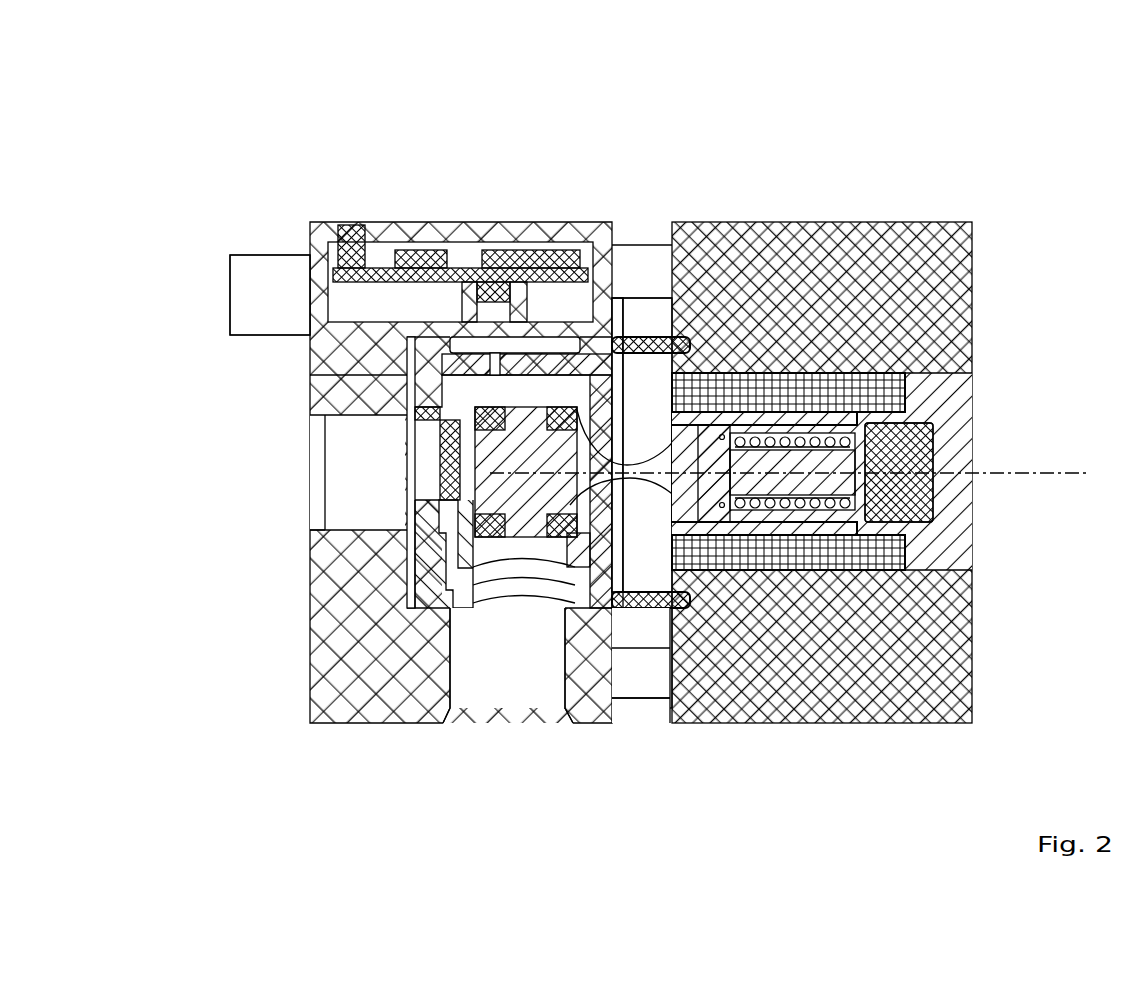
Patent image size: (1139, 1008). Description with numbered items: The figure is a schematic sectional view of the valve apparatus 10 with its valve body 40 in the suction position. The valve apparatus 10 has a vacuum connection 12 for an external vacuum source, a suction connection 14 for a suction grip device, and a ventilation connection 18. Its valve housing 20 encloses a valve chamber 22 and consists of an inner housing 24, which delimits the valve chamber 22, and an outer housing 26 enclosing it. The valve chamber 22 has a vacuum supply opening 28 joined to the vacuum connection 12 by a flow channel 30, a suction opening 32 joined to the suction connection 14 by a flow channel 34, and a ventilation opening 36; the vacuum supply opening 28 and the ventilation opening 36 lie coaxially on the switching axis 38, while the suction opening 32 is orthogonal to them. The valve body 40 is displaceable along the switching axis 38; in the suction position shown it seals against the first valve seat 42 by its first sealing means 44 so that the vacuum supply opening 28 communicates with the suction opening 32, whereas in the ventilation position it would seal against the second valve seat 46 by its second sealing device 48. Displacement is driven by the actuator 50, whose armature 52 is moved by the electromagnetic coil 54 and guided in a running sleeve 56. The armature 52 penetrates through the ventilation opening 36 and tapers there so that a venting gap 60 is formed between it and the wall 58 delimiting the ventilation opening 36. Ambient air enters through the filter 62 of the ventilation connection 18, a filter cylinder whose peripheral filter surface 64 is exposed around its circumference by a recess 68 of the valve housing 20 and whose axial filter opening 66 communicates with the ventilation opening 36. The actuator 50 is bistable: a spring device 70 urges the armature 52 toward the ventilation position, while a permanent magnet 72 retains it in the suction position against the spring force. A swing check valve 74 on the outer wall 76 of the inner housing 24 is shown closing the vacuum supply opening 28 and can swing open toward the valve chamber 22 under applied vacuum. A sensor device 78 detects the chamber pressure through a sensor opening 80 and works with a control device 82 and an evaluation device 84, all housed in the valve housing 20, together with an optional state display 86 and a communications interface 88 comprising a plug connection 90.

The valve apparatus 10 is at (530, 125).
The vacuum connection 12 is at (280, 478).
The suction connection 14 is at (505, 760).
The ventilation connection 18 is at (642, 760).
The valve housing 20 is at (785, 236).
The valve chamber 22 is at (458, 385).
The inner housing 24 is at (448, 598).
The outer housing 26 is at (322, 728).
The vacuum supply opening 28 is at (432, 455).
The flow channel 30 is at (357, 422).
The suction opening 32 is at (500, 575).
The flow channel 34 is at (480, 687).
The ventilation opening 36 is at (628, 570).
The switching axis 38 is at (1058, 480).
The valve body 40 is at (485, 462).
The first valve seat 42 is at (597, 553).
The first sealing means 44 is at (550, 537).
The second valve seat 46 is at (470, 545).
The second sealing device 48 is at (492, 533).
The actuator 50 is at (822, 471).
The armature 52 is at (698, 505).
The electromagnetic coil 54 is at (830, 560).
The running sleeve 56 is at (843, 440).
The wall 58 is at (698, 395).
The venting gap 60 is at (612, 437).
The filter 62 is at (626, 310).
The peripheral filter surface 64 is at (660, 328).
The axial filter opening 66 is at (612, 375).
The recess 68 is at (645, 168).
The spring device 70 is at (850, 412).
The permanent magnet 72 is at (920, 450).
The swing check valve 74 is at (405, 533).
The outer wall 76 is at (418, 575).
The sensor device 78 is at (490, 290).
The sensor opening 80 is at (497, 362).
The control device 82 is at (418, 255).
The evaluation device 84 is at (553, 258).
The state display 86 is at (352, 240).
The communications interface 88 is at (247, 300).
The plug connection 90 is at (270, 295).